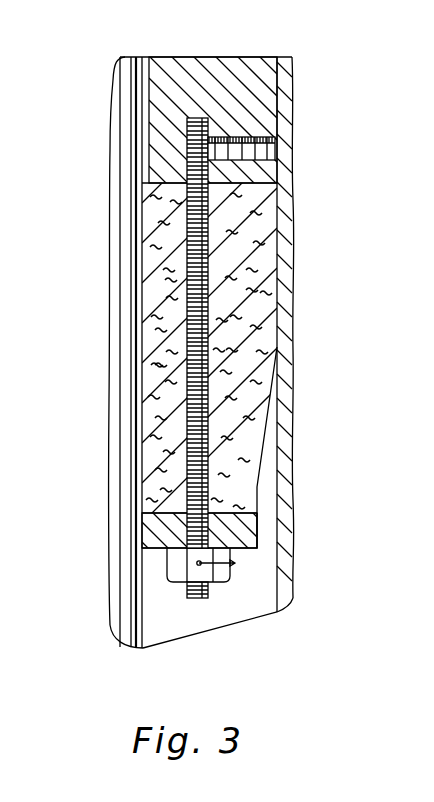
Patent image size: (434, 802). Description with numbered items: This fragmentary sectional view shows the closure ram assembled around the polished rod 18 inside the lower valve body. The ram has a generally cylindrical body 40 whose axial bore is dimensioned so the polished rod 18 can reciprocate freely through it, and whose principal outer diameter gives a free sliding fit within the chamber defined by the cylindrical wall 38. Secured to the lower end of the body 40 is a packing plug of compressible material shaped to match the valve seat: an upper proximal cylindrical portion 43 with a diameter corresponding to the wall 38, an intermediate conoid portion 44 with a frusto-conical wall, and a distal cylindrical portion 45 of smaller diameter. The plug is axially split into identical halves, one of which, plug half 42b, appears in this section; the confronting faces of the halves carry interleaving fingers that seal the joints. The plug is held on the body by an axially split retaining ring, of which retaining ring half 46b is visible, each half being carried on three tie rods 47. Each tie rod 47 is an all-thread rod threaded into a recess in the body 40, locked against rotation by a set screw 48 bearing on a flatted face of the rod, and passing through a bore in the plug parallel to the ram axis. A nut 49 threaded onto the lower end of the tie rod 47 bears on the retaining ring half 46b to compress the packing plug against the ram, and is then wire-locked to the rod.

The polished rod 18 is at (120, 152).
The cylindrical body 40 is at (225, 65).
The set screw 48 is at (235, 140).
The proximal cylindrical portion 43 is at (275, 233).
The plug half 42b is at (268, 292).
The tie rod 47 is at (207, 343).
The intermediate conoid portion 44 is at (265, 437).
The distal cylindrical portion 45 is at (255, 503).
The retaining ring half 46b is at (248, 530).
The cylindrical wall 38 is at (277, 590).
The nut 49 is at (223, 577).